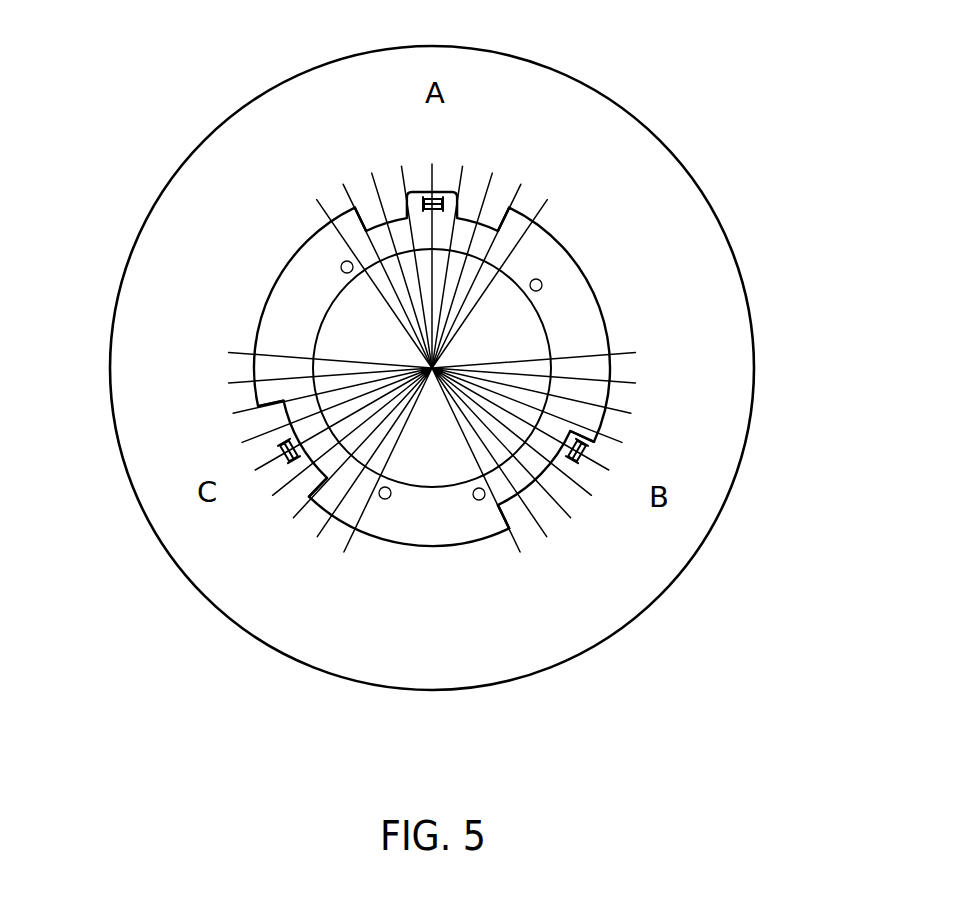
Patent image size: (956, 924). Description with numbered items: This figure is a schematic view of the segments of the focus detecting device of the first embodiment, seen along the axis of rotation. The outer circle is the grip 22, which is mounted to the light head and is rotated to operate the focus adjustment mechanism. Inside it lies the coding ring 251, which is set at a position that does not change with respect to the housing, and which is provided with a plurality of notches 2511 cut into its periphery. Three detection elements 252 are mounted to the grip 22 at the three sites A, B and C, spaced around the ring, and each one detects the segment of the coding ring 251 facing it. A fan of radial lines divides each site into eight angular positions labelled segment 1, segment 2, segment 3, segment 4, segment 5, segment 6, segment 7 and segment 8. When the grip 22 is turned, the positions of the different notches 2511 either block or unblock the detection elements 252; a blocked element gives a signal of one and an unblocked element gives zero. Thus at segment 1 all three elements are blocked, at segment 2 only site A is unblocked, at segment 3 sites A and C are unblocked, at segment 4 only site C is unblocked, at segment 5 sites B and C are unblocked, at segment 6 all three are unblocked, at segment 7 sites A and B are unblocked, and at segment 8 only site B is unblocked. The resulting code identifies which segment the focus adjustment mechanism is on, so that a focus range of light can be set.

The grip 22 is at (172, 228).
The coding ring 251 is at (580, 313).
The detection elements 252 is at (442, 197).
The notches 2511 is at (393, 208).
The segment 1 is at (493, 373).
The segment 2 is at (387, 257).
The segment 3 is at (402, 252).
The segment 4 is at (417, 250).
The segment 5 is at (446, 250).
The segment 6 is at (462, 252).
The segment 7 is at (478, 256).
The segment 8 is at (376, 367).